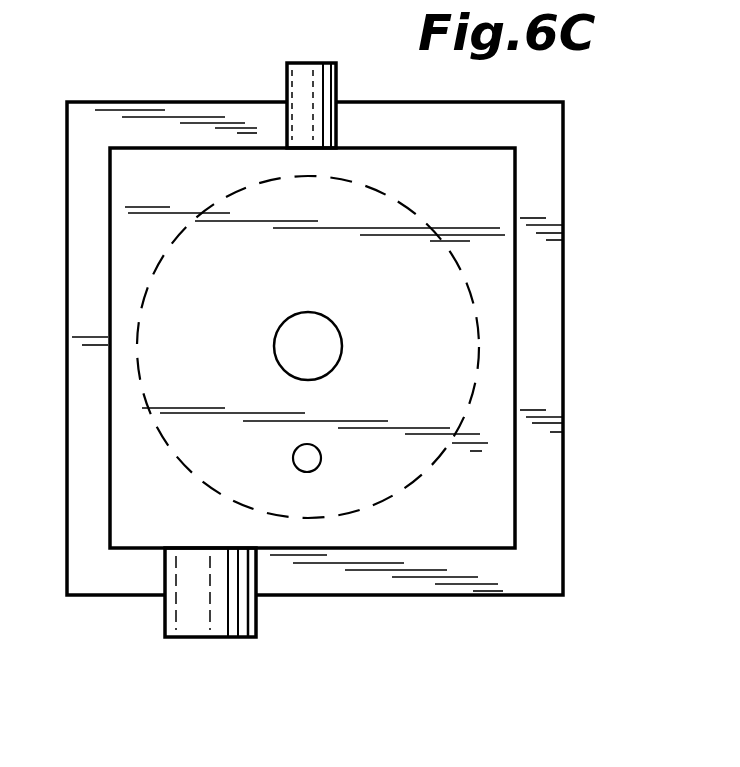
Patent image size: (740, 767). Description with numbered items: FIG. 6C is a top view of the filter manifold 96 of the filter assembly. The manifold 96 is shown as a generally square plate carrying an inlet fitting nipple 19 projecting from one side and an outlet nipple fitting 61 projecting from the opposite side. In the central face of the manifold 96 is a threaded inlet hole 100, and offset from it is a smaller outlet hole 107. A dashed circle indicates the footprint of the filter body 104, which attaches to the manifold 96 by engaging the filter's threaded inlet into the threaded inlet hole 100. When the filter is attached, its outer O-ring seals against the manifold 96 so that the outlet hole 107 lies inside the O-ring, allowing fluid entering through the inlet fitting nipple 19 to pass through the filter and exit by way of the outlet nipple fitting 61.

The manifold 96 is at (568, 182).
The outlet nipple fitting 61 is at (325, 90).
The inlet fitting nipple 19 is at (216, 626).
The filter body 104 is at (480, 331).
The threaded inlet hole 100 is at (344, 338).
The outlet hole 107 is at (322, 460).